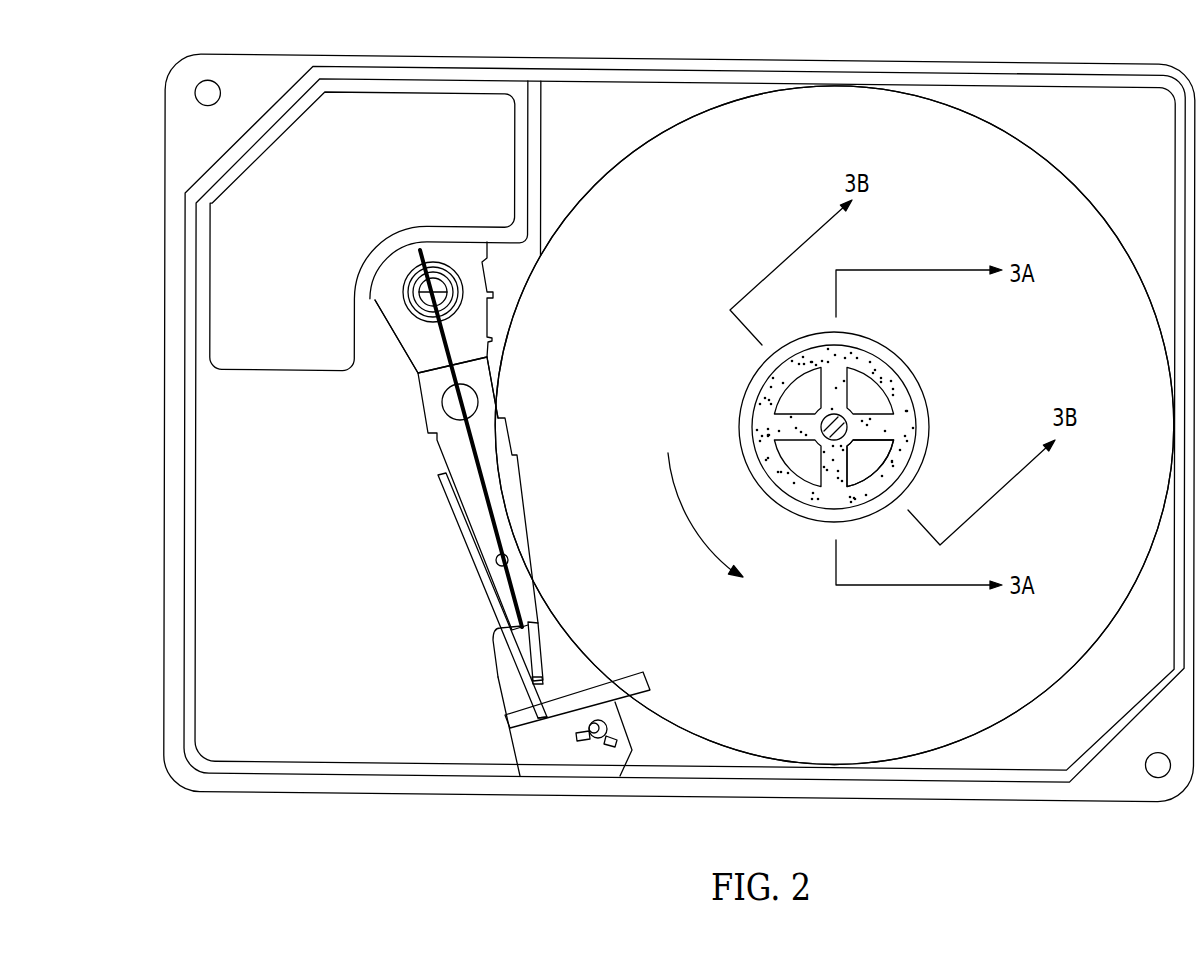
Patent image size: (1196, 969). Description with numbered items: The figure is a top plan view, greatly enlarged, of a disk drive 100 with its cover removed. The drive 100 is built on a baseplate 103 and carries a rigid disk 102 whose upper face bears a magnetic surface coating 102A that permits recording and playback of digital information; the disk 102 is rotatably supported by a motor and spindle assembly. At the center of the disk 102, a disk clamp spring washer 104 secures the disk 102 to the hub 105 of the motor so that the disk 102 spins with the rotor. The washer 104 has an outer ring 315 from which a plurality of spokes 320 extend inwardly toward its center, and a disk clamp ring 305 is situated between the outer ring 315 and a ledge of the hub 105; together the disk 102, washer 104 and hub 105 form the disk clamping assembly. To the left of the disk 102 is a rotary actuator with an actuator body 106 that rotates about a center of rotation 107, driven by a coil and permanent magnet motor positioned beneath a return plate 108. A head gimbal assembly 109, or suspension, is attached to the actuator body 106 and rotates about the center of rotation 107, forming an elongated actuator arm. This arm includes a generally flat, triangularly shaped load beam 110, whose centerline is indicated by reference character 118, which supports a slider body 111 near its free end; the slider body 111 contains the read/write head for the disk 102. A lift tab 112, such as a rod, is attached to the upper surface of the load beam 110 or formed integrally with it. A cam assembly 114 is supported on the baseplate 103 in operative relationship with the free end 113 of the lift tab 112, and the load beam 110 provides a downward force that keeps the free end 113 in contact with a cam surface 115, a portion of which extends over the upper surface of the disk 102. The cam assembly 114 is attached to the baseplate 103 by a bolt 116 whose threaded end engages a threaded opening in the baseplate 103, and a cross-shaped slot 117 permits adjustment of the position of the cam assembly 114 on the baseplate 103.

The disk drive 100 is at (152, 134).
The rigid disk 102 is at (731, 240).
The magnetic surface coating 102A is at (1047, 185).
The baseplate 103 is at (378, 55).
The disk clamp spring washer 104 is at (805, 357).
The hub 105 is at (878, 467).
The actuator body 106 is at (417, 363).
The center of rotation 107 is at (450, 292).
The return plate 108 is at (467, 107).
The head gimbal assembly 109 is at (511, 374).
The load beam 110 is at (517, 523).
The slider body 111 is at (542, 650).
The lift tab 112 is at (485, 577).
The free end of lift tab 113 is at (535, 700).
The cam assembly 114 is at (618, 723).
The cam surface 115 is at (517, 726).
The bolt 116 is at (592, 740).
The cross-shaped slot 117 is at (577, 740).
The centerline of load beam 118 is at (488, 487).
The disk clamp ring 305 is at (908, 360).
The outer ring 315 is at (792, 492).
The spokes 320 is at (782, 423).